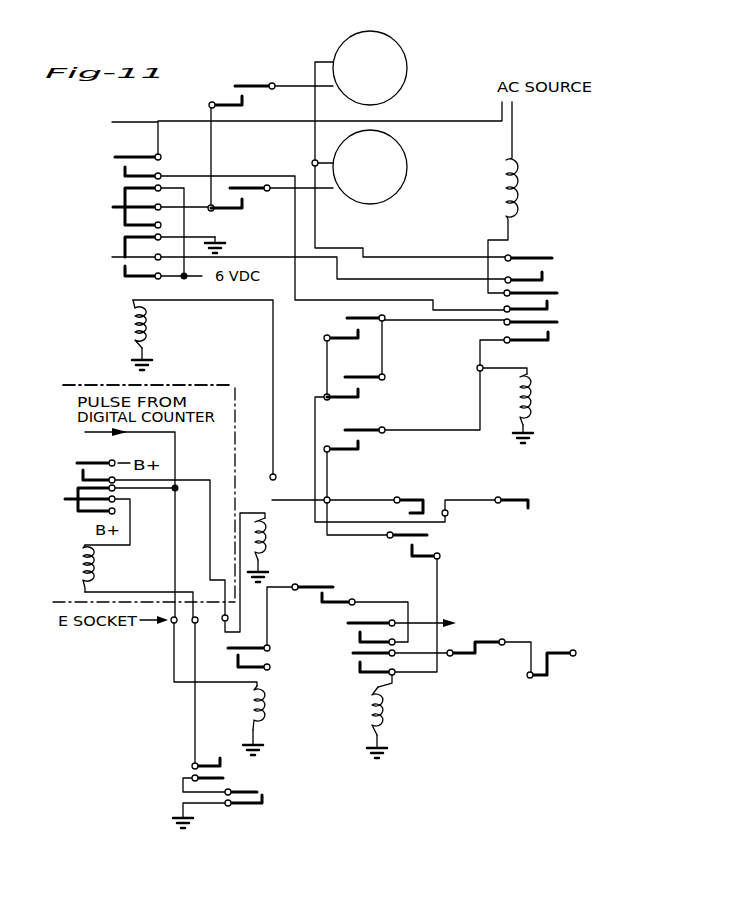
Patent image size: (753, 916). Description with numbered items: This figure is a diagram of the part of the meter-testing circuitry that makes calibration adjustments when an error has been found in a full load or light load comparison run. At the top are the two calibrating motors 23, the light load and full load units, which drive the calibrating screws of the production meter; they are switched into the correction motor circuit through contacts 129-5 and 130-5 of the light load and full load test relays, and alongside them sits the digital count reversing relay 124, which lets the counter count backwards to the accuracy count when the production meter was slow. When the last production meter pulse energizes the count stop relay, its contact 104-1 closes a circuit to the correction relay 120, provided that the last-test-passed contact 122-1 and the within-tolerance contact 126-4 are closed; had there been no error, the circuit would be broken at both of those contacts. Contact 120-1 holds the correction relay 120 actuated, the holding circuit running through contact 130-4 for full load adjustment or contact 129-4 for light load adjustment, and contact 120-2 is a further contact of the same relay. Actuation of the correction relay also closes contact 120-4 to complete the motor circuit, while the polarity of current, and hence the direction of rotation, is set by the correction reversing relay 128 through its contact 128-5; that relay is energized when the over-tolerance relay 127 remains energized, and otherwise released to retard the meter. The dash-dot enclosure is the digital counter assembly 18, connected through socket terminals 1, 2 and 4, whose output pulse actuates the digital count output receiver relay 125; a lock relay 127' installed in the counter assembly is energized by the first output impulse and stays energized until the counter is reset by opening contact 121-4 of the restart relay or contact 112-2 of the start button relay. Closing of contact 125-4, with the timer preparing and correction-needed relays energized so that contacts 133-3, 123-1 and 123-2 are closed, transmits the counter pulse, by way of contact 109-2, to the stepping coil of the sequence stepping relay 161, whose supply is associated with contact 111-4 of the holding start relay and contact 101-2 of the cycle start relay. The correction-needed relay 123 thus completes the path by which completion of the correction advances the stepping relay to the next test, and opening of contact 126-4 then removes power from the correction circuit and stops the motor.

The calibrating motor 23 is at (421, 180).
The light load test relay contact 129-5 is at (244, 99).
The correction reversing relay contact 128-5 is at (127, 167).
The full load test relay contact 130-5 is at (252, 201).
The digital count reversing relay 124 is at (517, 212).
The correction relay contact 120-4 is at (544, 275).
The correction relay contact 120-2 is at (549, 304).
The correction relay holding contact 120-1 is at (550, 335).
The correction relay 120 is at (533, 398).
The correction reversing relay 128 is at (148, 328).
The digital counter assembly 18 is at (227, 392).
The full load test relay contact 130-4 is at (356, 332).
The light load test relay contact 129-4 is at (360, 391).
The count stop relay contact 104-1 is at (360, 444).
The last test passed relay contact 122-1 is at (412, 505).
The within-tolerance relay contact 126-4 is at (530, 506).
The relay contact 109-2 is at (414, 547).
The lock relay 127' is at (111, 568).
The over-tolerance relay 127 is at (280, 542).
The timer preparing relay contact 133-3 is at (324, 595).
The sequence stepping relay 161 is at (535, 623).
The correction-needed relay contact 123-2 is at (359, 635).
The correction-needed relay contact 123-1 is at (362, 664).
The holding start relay contact 111-4 is at (478, 650).
The cycle start relay contact 101-2 is at (550, 669).
The digital count output receiver relay contact 125-4 is at (282, 667).
The digital count output receiver relay 125 is at (266, 704).
The correction-needed relay 123 is at (385, 705).
The restart relay contact 121-4 is at (222, 770).
The start button relay contact 112-2 is at (264, 797).
The socket pin 1 is at (179, 625).
The socket pin 2 is at (200, 626).
The socket pin 4 is at (220, 611).